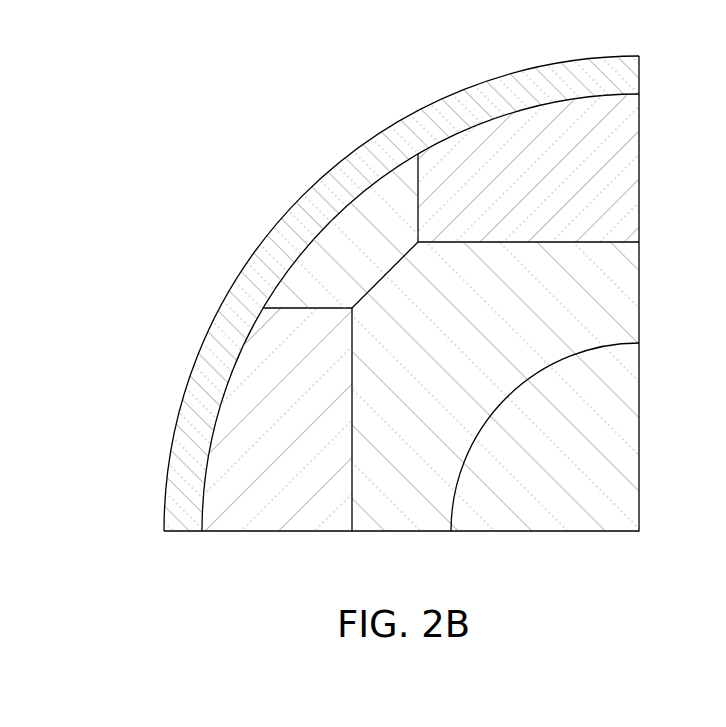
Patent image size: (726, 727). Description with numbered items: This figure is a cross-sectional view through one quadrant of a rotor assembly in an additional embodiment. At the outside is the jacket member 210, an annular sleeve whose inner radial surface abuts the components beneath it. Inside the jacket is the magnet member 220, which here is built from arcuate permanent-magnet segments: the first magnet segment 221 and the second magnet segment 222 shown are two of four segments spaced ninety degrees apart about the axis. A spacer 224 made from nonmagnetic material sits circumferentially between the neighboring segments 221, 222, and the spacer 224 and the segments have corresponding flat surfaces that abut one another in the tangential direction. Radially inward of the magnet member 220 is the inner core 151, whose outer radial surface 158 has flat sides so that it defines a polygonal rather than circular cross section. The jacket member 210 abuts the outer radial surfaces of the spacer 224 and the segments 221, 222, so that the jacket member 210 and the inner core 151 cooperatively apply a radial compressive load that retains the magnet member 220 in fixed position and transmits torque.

The jacket member 210 is at (323, 200).
The first magnet segment 221 is at (497, 137).
The magnet member 220 is at (613, 187).
The second magnet segment 222 is at (245, 417).
The spacer 224 is at (338, 240).
The inner core 151 is at (574, 253).
The outer radial surface 158 is at (352, 510).